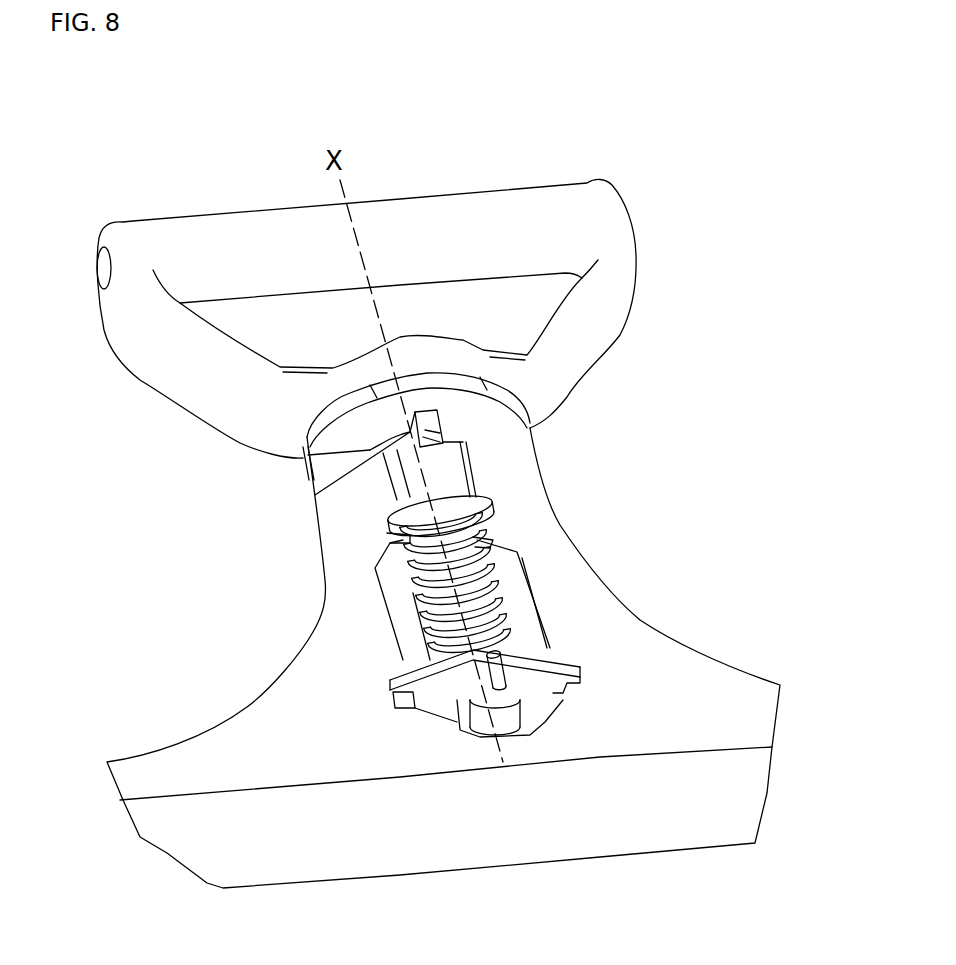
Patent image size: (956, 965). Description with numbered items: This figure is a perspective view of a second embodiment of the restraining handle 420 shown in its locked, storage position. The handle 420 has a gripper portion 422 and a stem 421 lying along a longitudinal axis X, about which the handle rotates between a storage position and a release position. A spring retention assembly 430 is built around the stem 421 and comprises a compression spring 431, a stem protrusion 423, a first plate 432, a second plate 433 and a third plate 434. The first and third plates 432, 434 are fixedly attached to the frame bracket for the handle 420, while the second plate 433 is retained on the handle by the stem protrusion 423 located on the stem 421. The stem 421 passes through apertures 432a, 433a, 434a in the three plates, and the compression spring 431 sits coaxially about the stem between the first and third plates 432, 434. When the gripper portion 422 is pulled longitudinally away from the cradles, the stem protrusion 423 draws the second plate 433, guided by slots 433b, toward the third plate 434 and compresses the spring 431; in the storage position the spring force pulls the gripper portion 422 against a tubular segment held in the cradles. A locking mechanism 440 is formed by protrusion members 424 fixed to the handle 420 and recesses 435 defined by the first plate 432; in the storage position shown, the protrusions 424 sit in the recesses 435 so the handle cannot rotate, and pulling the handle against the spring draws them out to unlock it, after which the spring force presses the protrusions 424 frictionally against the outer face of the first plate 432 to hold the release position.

The restraining handle 420 is at (145, 209).
The gripper portion 422 is at (200, 383).
The locking mechanism 440 is at (283, 482).
The first plate 432 is at (500, 395).
The aperture of first plate 432a is at (358, 447).
The stem 421 is at (417, 480).
The recesses 435 is at (440, 412).
The protrusion members 424 is at (445, 443).
The third plate 434 is at (495, 505).
The aperture of third plate 434a is at (505, 544).
The spring retention assembly 430 is at (541, 605).
The compression spring 431 is at (423, 578).
The second plate 433 is at (547, 700).
The slots 433b is at (405, 690).
The aperture of second plate 433a is at (460, 727).
The stem protrusion 423 is at (507, 675).